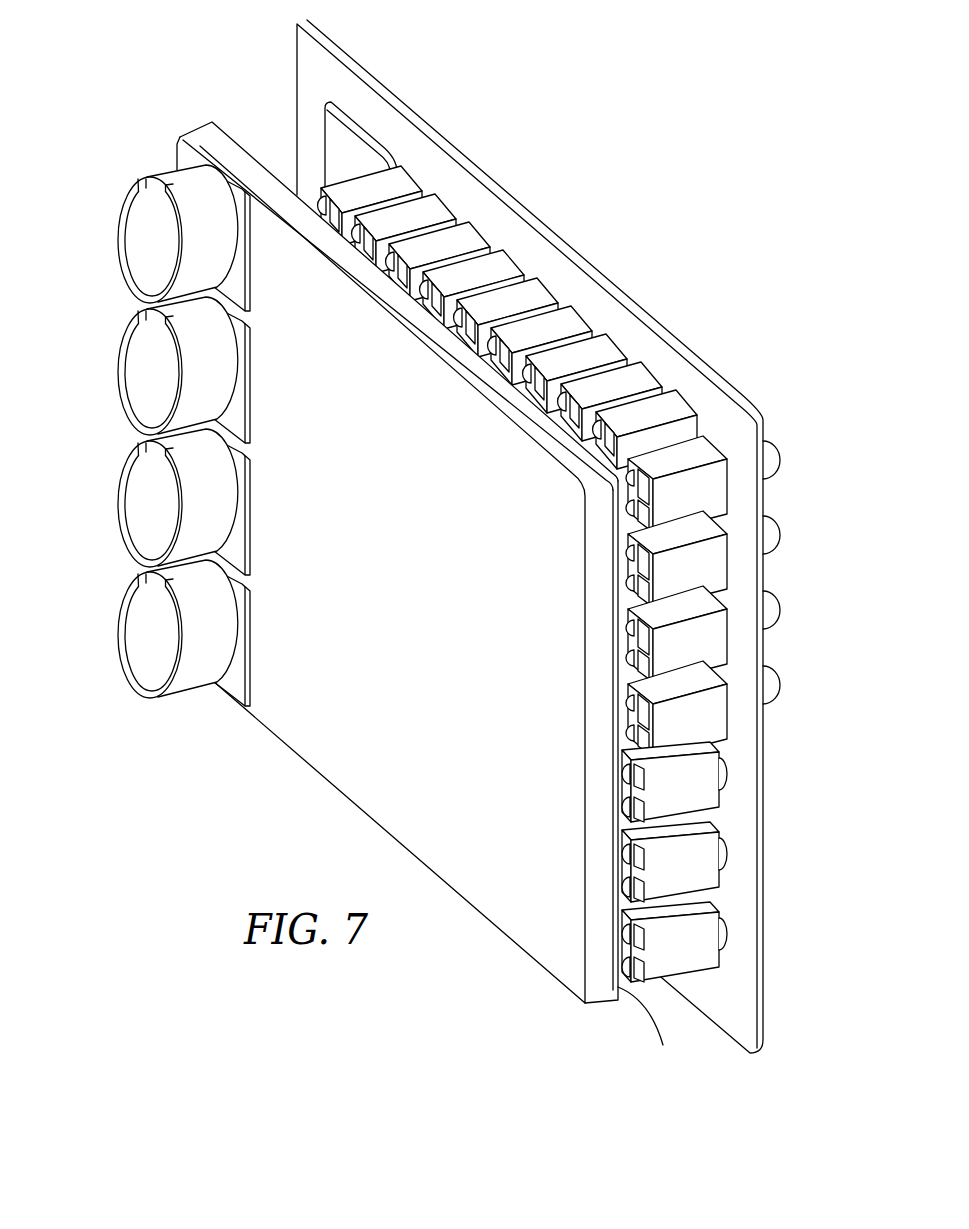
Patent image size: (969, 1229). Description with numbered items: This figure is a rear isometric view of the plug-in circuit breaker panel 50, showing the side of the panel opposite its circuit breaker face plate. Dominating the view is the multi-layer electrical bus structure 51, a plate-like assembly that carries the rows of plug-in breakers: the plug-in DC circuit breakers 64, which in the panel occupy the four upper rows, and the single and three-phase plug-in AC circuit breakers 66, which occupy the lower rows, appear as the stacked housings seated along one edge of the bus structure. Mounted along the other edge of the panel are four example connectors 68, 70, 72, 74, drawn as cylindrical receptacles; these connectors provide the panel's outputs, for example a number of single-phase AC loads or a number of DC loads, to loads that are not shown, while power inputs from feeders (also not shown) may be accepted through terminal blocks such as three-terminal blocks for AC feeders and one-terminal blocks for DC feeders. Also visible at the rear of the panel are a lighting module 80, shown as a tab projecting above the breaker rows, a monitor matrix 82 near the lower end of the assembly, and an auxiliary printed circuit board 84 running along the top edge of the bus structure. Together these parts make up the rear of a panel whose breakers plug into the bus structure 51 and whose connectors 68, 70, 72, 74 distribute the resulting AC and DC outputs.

The plug-in circuit breaker panel 50 is at (600, 220).
The multi-layer electrical bus structure 51 is at (597, 1014).
The plug-in DC circuit breakers 64 is at (708, 553).
The plug-in AC circuit breakers 66 is at (700, 943).
The connector 68 is at (118, 234).
The connector 70 is at (118, 366).
The connector 72 is at (118, 497).
The connector 74 is at (118, 627).
The lighting module 80 is at (345, 140).
The monitor matrix 82 is at (652, 1032).
The auxiliary printed circuit board 84 is at (231, 118).